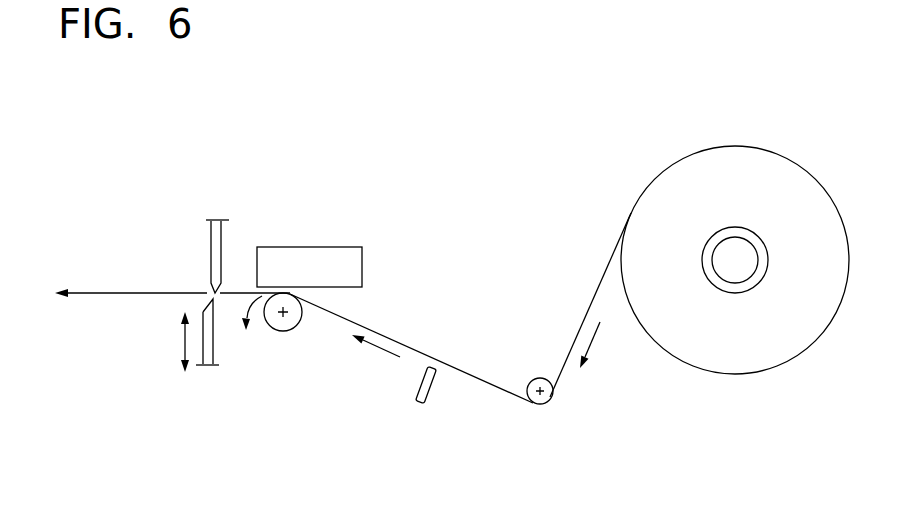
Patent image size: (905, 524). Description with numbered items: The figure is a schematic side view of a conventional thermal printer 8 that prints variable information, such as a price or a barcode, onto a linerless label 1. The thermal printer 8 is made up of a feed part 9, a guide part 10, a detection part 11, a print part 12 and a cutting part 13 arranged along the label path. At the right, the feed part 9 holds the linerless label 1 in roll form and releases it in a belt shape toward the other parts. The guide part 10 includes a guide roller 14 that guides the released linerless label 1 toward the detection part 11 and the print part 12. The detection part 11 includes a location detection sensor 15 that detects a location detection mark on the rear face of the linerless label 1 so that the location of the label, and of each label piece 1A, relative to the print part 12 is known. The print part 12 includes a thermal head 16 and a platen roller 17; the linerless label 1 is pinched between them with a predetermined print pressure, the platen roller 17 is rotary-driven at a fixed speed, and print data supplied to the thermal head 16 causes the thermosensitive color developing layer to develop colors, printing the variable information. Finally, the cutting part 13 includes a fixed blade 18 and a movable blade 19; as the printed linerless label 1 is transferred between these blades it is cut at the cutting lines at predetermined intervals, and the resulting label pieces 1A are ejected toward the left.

The linerless label 1 is at (260, 343).
The label piece 1A is at (150, 291).
The thermal printer 8 is at (501, 258).
The feed part 9 is at (758, 305).
The guide part 10 is at (539, 426).
The detection part 11 is at (436, 426).
The print part 12 is at (312, 219).
The cutting part 13 is at (222, 200).
The guide roller 14 is at (537, 378).
The location detection sensor 15 is at (436, 392).
The thermal head 16 is at (343, 247).
The platen roller 17 is at (303, 322).
The fixed blade 18 is at (208, 238).
The movable blade 19 is at (213, 345).